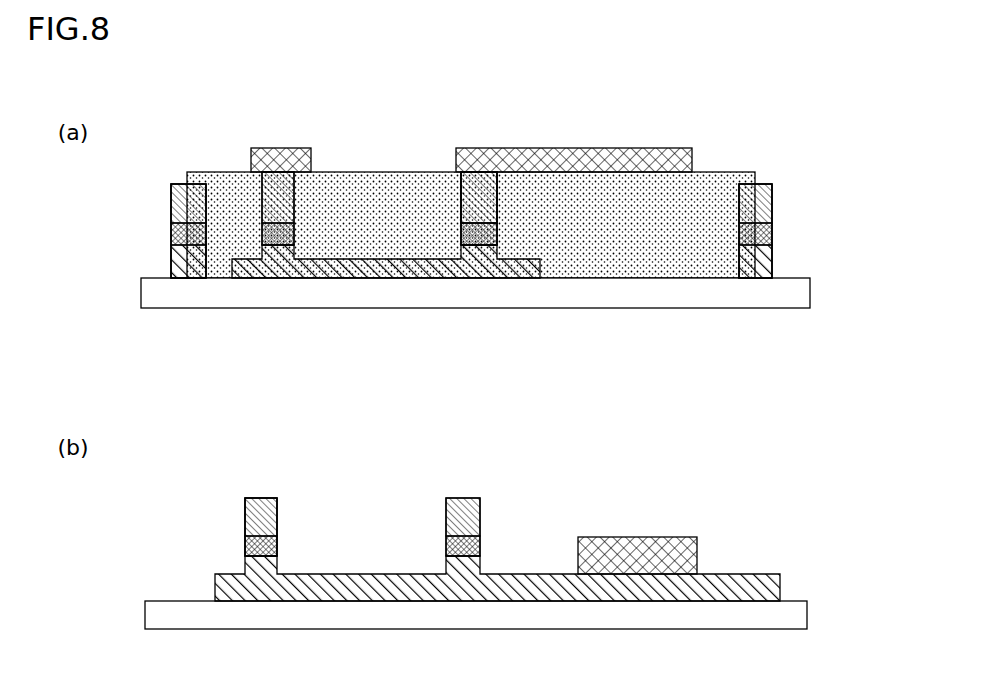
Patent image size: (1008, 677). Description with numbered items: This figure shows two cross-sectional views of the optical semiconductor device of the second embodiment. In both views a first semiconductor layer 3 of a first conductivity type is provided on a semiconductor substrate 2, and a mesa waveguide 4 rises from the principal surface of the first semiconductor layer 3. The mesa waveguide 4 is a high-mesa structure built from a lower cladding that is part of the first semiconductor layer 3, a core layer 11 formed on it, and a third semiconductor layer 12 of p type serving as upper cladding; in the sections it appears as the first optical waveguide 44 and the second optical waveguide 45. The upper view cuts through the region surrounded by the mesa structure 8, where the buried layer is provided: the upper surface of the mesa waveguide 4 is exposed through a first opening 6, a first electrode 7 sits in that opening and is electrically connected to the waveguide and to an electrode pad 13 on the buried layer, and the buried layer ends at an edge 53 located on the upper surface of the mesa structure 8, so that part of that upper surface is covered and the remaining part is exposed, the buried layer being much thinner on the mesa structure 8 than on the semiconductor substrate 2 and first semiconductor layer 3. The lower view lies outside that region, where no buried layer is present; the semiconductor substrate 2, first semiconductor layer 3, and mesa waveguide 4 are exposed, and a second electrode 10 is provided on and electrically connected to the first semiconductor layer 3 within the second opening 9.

The semiconductor substrate 2 is at (768, 300).
The first semiconductor layer 3 is at (772, 262).
The mesa waveguide 4 is at (452, 188).
The first opening 6 is at (481, 182).
The first electrode 7 is at (258, 146).
The mesa structure 8 is at (739, 190).
The second opening 9 is at (148, 240).
The second electrode 10 is at (634, 555).
The core layer 11 is at (497, 233).
The third semiconductor layer 12 is at (497, 202).
The electrode pad 13 is at (646, 160).
The first optical waveguide 44 is at (280, 132).
The second optical waveguide 45 is at (483, 132).
The edge 53 is at (185, 184).